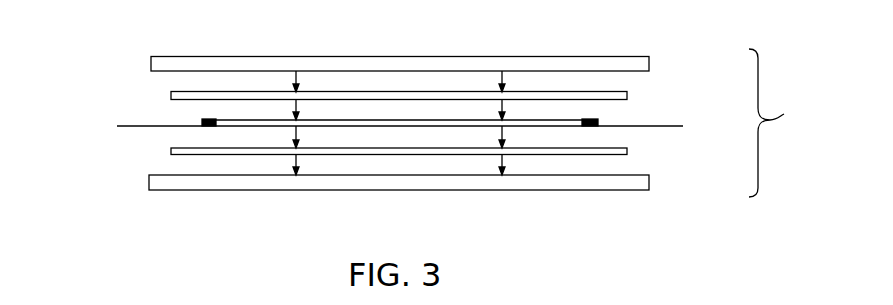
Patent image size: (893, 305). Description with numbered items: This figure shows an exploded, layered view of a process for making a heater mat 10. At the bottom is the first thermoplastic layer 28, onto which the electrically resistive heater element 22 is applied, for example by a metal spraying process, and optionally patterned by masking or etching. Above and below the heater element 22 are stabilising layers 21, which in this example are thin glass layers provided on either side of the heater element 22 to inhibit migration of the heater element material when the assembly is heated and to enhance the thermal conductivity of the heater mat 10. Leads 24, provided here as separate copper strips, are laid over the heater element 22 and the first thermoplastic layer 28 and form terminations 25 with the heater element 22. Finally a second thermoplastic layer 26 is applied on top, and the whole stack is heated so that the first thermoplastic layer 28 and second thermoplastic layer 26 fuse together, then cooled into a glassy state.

The heater mat 10 is at (781, 123).
The stabilising layer 21 is at (158, 94).
The electrically resistive heater element 22 is at (572, 115).
The leads 24 is at (136, 126).
The terminations 25 is at (198, 131).
The second thermoplastic layer 26 is at (172, 63).
The first thermoplastic layer 28 is at (168, 180).